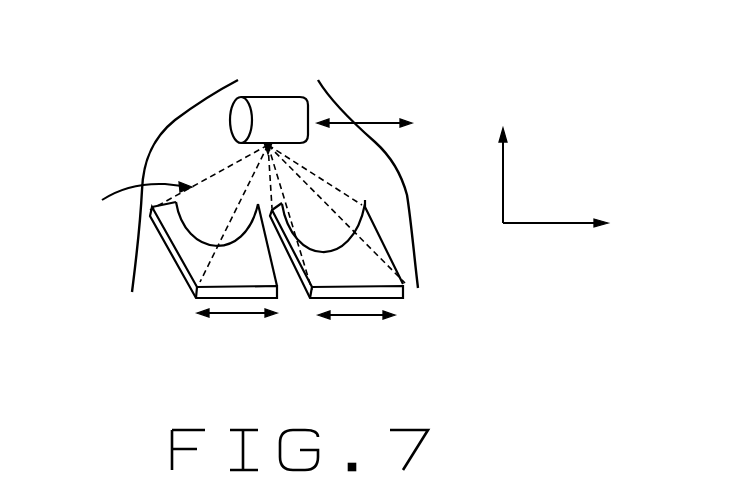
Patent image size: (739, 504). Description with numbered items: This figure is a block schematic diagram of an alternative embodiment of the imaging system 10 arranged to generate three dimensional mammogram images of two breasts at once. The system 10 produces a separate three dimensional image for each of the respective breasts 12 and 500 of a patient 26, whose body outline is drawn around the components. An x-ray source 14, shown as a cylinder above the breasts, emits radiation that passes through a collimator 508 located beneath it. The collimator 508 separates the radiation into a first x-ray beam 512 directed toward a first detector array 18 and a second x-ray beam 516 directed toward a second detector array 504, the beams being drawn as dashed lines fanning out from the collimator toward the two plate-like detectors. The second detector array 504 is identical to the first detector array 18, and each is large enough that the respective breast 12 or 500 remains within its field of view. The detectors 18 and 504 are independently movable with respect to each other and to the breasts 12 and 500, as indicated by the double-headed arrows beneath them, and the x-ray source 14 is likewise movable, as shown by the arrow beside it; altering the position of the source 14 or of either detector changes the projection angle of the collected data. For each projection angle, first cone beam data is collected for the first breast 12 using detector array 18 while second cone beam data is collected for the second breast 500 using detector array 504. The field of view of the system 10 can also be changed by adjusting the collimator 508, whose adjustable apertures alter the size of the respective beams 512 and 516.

The imaging system 10 is at (450, 96).
The first breast 12 is at (193, 238).
The x-ray source 14 is at (283, 98).
The first detector array 18 is at (278, 297).
The patient 26 is at (413, 246).
The second breast 500 is at (343, 251).
The second detector array 504 is at (404, 298).
The collimator 508 is at (266, 147).
The first x-ray beam 512 is at (120, 197).
The second x-ray beam 516 is at (330, 183).